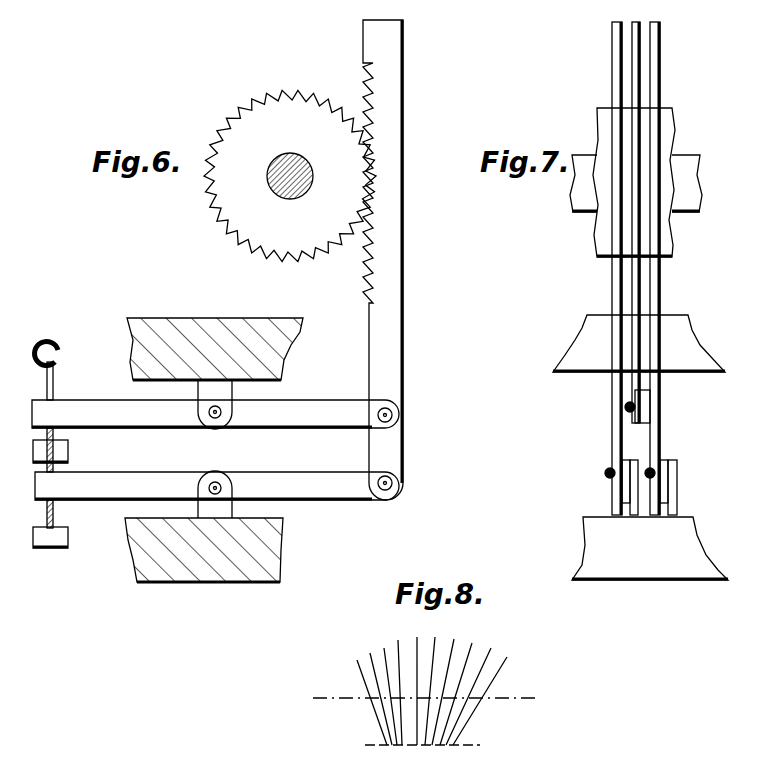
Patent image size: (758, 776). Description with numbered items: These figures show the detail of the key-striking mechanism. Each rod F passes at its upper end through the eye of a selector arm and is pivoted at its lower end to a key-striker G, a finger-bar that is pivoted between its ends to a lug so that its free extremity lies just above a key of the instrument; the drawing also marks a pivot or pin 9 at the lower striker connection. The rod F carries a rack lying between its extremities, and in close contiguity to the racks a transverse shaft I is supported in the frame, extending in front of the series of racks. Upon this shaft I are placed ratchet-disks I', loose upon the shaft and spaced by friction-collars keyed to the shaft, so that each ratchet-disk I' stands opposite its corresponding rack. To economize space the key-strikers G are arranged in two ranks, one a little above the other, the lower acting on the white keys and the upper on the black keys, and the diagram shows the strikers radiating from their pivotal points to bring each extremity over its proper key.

In FIG. 6, the transverse shaft I is at (290, 176).
In FIG. 6, the ratchet-disk I' is at (290, 175).
In FIG. 6, the rod F is at (383, 260).
In FIG. 7, the rod F is at (663, 287).
In FIG. 6, the key-striker G is at (215, 450).
In FIG. 7, the key-striker G is at (663, 458).
In FIG. 6, the pin 9 is at (215, 495).